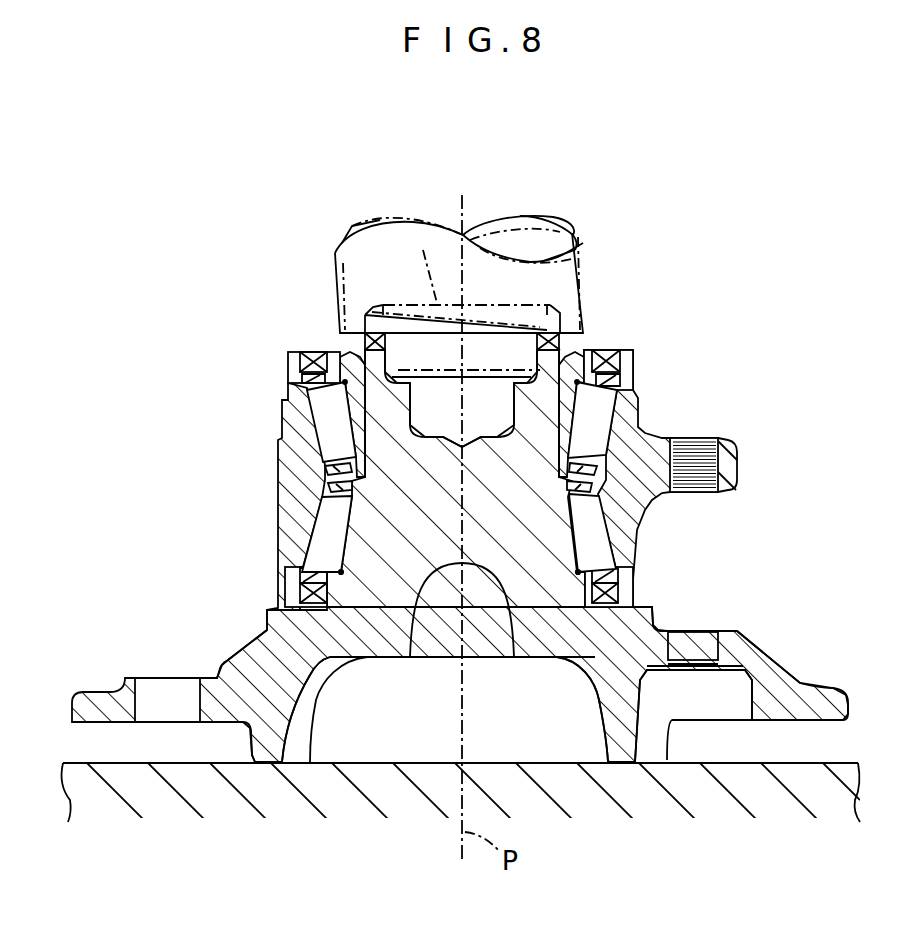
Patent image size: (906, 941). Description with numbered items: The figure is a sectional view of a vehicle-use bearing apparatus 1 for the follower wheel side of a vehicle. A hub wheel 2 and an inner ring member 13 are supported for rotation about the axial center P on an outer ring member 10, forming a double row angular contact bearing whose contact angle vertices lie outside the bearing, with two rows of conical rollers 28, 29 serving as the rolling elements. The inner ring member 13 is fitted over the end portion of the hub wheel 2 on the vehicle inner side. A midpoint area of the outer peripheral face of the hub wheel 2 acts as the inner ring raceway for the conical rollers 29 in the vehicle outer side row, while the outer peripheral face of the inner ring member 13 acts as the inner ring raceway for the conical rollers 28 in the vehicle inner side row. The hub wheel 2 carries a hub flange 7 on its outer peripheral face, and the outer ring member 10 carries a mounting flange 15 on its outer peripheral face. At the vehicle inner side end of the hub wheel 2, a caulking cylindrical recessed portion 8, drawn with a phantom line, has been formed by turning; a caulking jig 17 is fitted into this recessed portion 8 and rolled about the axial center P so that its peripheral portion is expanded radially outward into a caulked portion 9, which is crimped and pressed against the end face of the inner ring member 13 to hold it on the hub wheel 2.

The vehicle-use bearing apparatus 1 is at (158, 297).
The hub wheel 2 is at (522, 543).
The hub flange 7 is at (87, 707).
The caulking cylindrical recessed portion 8 is at (423, 250).
The caulked portion 9 is at (570, 340).
The outer ring member 10 is at (290, 540).
The inner ring member 13 is at (343, 367).
The mounting flange 15 is at (728, 465).
The caulking jig 17 is at (583, 330).
The conical rollers 28 is at (333, 412).
The conical rollers 29 is at (317, 553).